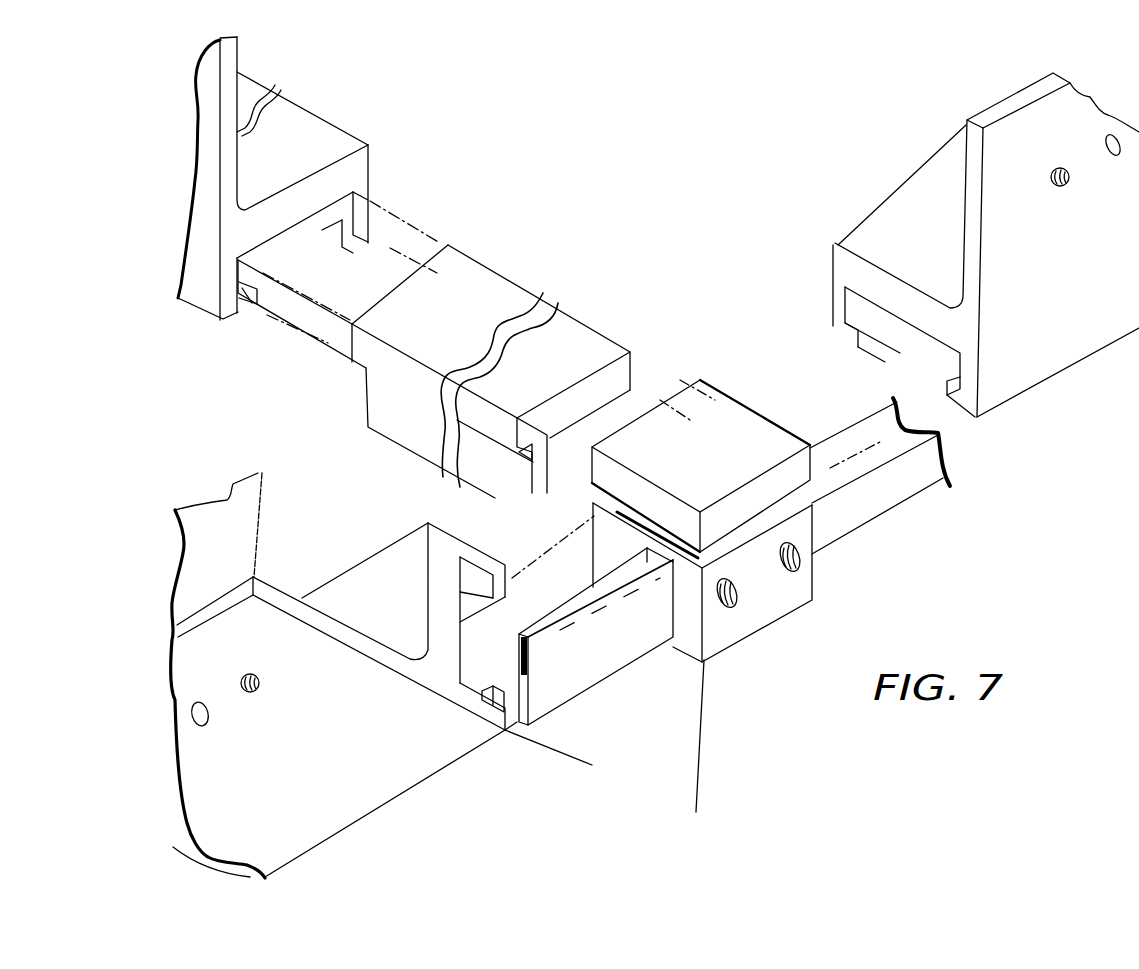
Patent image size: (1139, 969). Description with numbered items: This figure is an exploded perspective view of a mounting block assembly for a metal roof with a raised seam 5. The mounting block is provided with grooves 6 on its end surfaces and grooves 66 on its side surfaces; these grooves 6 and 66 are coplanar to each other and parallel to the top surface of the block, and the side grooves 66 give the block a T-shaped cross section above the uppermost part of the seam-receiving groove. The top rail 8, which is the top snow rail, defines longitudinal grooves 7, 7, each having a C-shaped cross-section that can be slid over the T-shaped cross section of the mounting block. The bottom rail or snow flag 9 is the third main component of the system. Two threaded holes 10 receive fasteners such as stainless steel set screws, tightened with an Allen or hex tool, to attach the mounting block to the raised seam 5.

The raised seam 5 is at (532, 629).
The grooves 6 is at (593, 525).
The longitudinal grooves 7 is at (332, 222).
The top rail 8 is at (228, 53).
The snow flag 9 is at (622, 370).
The threaded holes 10 is at (723, 610).
The grooves 66 is at (607, 500).